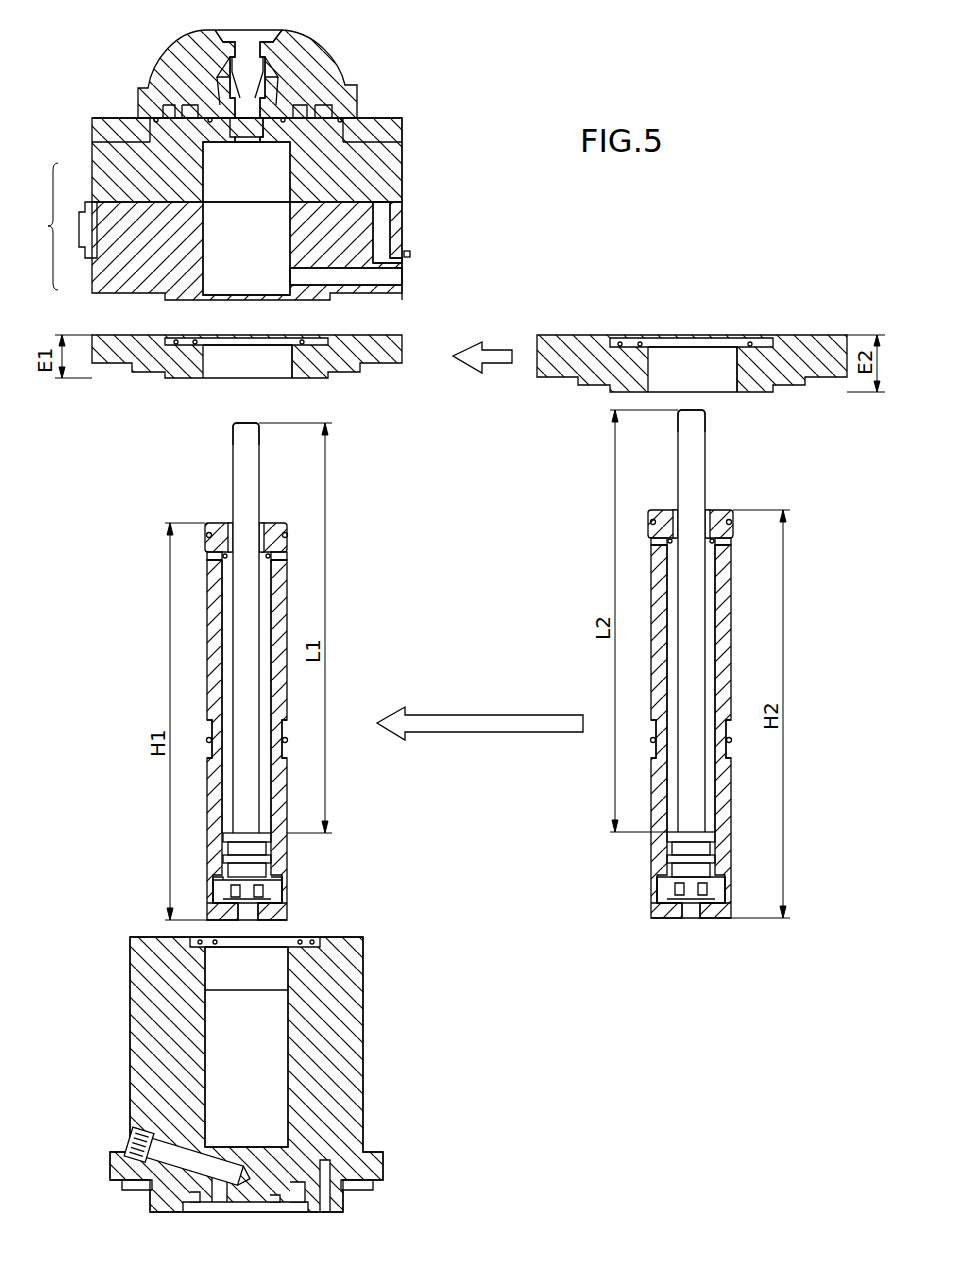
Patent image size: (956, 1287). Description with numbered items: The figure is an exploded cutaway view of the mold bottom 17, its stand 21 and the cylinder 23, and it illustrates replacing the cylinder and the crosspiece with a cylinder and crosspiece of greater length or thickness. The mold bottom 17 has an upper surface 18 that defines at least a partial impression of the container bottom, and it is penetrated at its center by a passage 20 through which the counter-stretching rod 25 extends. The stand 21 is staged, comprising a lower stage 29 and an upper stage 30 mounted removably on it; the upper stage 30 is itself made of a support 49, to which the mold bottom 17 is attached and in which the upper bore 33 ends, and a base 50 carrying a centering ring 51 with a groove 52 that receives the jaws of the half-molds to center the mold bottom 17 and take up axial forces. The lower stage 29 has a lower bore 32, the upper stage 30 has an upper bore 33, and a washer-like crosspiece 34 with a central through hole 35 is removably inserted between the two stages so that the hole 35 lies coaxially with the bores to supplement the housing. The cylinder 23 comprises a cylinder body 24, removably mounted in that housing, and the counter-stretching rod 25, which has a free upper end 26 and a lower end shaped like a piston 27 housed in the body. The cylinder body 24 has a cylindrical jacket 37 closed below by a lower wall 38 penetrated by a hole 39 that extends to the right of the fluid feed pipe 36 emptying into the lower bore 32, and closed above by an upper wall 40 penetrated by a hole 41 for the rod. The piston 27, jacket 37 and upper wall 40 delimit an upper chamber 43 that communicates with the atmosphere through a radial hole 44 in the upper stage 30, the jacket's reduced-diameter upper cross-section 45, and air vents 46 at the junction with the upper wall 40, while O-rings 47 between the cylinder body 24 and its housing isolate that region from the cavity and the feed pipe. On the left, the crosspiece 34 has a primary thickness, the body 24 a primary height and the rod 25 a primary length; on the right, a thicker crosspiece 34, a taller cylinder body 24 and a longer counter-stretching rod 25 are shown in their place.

The mold bottom 17 is at (340, 68).
The upper surface 18 is at (312, 48).
The passage 20 is at (243, 48).
The stand 21 is at (408, 159).
The cylinder 23 is at (290, 875).
The cylinder body 24 is at (287, 702).
The counter-stretching rod 25 is at (240, 465).
The free upper end 26 is at (242, 425).
The piston 27 is at (262, 852).
The lower stage 29 is at (358, 1057).
The upper stage 30 is at (50, 226).
The lower bore 32 is at (258, 1069).
The upper bore 33 is at (262, 262).
The crosspiece 34 is at (368, 355).
The central through hole 35 is at (260, 369).
The fluid feed pipe 36 is at (247, 1150).
The cylindrical jacket 37 is at (207, 797).
The lower wall 38 is at (272, 917).
The hole 39 is at (245, 925).
The upper wall 40 is at (218, 526).
The hole 41 is at (218, 540).
The upper chamber 43 is at (228, 652).
The hole 44 is at (392, 278).
The upper cross-section 45 is at (208, 603).
The air vent 46 is at (282, 556).
The O-ring 47 is at (288, 536).
The support 49 is at (95, 173).
The base 50 is at (96, 280).
The centering ring 51 is at (412, 252).
The groove 52 is at (398, 230).